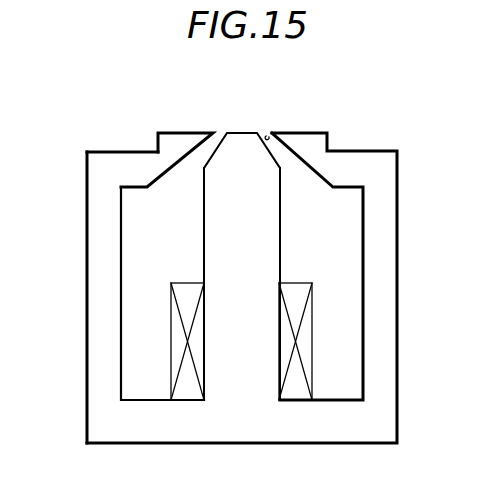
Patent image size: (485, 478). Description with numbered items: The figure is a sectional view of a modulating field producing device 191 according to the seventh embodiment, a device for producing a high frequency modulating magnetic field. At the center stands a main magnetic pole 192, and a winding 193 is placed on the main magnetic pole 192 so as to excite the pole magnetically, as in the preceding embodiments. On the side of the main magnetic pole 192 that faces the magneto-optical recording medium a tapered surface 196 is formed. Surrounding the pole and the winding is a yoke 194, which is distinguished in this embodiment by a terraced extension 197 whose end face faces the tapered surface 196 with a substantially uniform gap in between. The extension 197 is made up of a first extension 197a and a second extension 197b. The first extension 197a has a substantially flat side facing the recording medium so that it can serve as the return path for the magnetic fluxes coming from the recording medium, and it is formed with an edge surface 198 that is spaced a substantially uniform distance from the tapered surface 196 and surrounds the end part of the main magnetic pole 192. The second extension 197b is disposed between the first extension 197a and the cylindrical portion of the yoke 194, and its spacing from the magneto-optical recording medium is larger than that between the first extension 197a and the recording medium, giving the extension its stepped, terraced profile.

The modulating field producing device 191 is at (397, 272).
The main magnetic pole 192 is at (275, 222).
The winding 193 is at (307, 345).
The yoke 194 is at (87, 307).
The tapered surface 196 is at (222, 131).
The extension 197 is at (327, 158).
The first extension 197a is at (172, 131).
The second extension 197b is at (107, 160).
The edge surface 198 is at (267, 135).